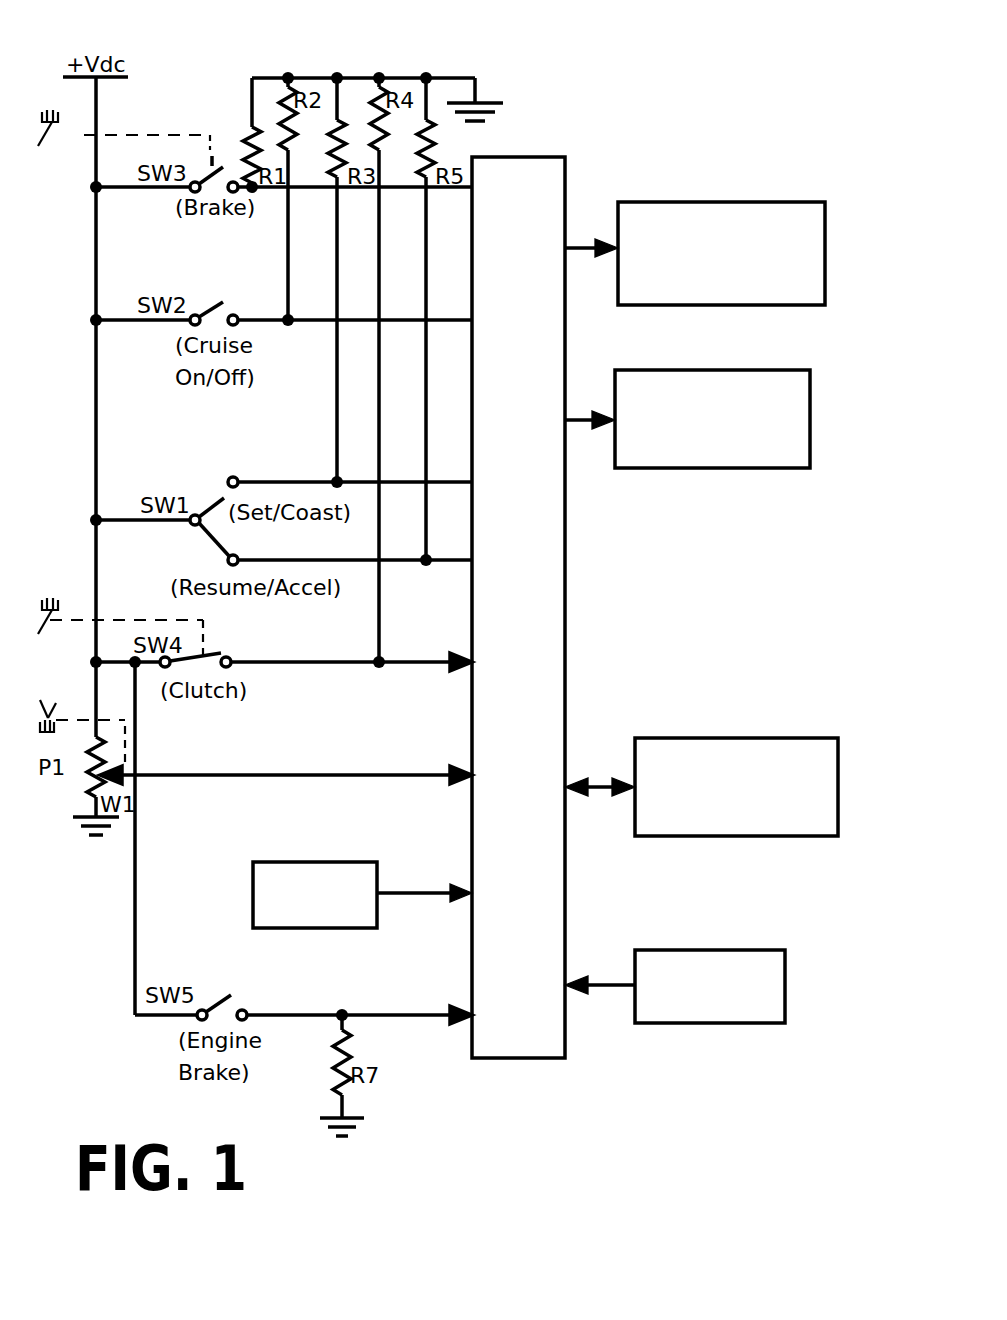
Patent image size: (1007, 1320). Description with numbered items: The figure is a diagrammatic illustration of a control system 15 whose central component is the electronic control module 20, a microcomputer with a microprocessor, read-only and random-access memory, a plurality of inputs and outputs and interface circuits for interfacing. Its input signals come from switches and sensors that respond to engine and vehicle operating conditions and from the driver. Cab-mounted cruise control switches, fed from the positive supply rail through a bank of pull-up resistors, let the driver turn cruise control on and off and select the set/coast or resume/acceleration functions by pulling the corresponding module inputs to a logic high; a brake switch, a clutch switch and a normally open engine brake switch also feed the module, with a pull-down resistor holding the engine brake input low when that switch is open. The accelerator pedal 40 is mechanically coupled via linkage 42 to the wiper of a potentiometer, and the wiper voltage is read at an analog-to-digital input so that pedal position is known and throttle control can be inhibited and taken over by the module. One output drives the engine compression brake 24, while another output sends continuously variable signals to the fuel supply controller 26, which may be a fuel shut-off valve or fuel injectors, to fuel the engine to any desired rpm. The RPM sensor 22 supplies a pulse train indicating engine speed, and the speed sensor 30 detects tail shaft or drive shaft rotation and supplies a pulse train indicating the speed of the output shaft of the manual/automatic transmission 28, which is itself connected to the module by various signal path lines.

The control system 15 is at (592, 1076).
The electronic control module 20 is at (565, 177).
The RPM sensor 22 is at (347, 862).
The engine compression brake 24 is at (825, 261).
The fuel supply controller 26 is at (810, 418).
The manual/automatic transmission 28 is at (838, 785).
The speed sensor 30 is at (785, 983).
The accelerator pedal 40 is at (72, 705).
The linkage 42 is at (125, 740).